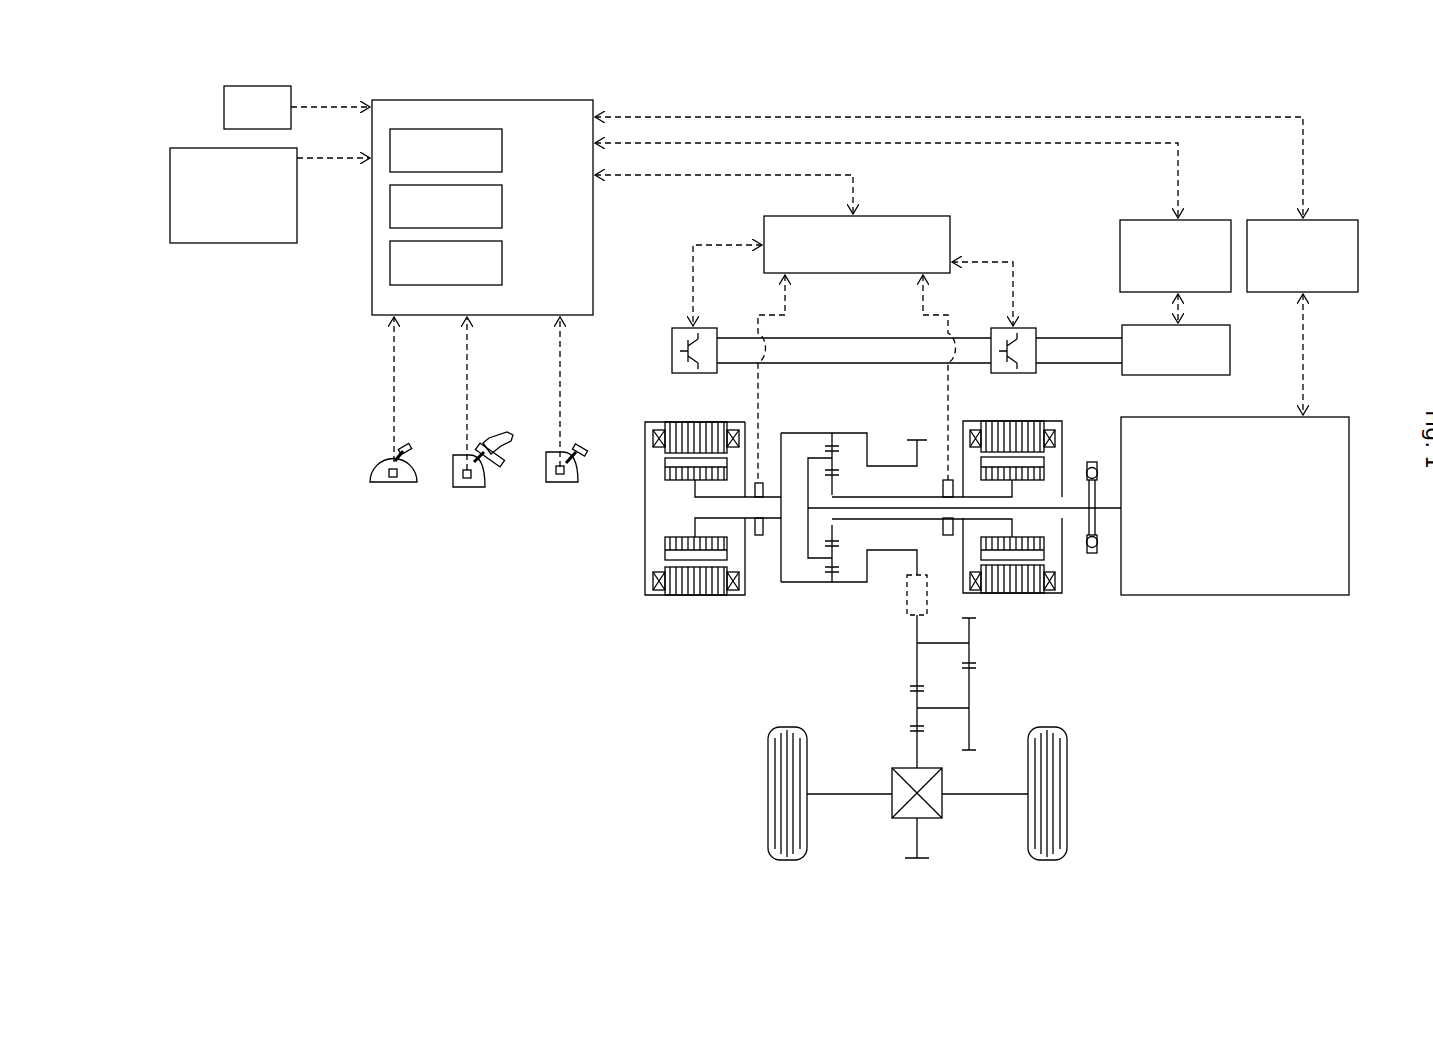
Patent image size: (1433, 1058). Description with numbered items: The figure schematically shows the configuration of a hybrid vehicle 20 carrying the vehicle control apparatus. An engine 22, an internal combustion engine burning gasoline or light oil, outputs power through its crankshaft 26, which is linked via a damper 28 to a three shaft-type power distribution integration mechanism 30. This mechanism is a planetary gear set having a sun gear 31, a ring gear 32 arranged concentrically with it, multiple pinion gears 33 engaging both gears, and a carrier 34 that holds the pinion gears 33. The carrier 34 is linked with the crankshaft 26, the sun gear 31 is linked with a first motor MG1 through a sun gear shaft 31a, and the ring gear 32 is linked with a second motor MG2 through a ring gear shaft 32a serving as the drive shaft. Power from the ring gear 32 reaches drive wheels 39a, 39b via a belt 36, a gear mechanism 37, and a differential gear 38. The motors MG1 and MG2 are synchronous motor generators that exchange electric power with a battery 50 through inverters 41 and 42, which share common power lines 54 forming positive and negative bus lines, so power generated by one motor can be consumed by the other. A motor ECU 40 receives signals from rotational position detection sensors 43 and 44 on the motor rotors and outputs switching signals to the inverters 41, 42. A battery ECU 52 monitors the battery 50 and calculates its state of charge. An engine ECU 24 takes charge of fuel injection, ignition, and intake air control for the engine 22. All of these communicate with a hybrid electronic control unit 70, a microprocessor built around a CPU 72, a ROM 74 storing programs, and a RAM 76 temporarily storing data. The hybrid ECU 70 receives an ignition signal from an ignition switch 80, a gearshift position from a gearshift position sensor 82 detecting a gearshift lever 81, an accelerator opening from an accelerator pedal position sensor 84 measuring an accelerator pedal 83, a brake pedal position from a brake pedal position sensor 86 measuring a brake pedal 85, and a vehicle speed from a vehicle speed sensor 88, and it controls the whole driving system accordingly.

The hybrid vehicle 20 is at (1327, 107).
The engine 22 is at (1273, 595).
The engine ECU 24 is at (1345, 220).
The crankshaft 26 is at (1110, 507).
The damper 28 is at (1089, 553).
The power distribution integration mechanism 30 is at (760, 670).
The sun gear 31 is at (835, 532).
The sun gear shaft 31a is at (917, 519).
The ring gear 32 is at (832, 440).
The ring gear shaft 32a is at (747, 518).
The pinion gears 33 is at (835, 462).
The carrier 34 is at (807, 467).
The belt 36 is at (928, 600).
The gear mechanism 37 is at (1085, 713).
The differential gear 38 is at (942, 807).
The drive wheel 39a is at (768, 832).
The drive wheel 39b is at (1067, 832).
The motor ECU 40 is at (910, 216).
The inverter 41 is at (683, 328).
The inverter 42 is at (1023, 327).
The rotational position detection sensor 43 is at (946, 480).
The rotational position detection sensor 44 is at (756, 483).
The battery 50 is at (1230, 352).
The battery ECU 52 is at (1205, 220).
The power lines 54 is at (832, 363).
The hybrid electronic control unit 70 is at (372, 260).
The CPU 72 is at (503, 153).
The ROM 74 is at (503, 208).
The RAM 76 is at (503, 265).
The ignition switch 80 is at (224, 103).
The gearshift lever 81 is at (410, 457).
The gearshift position sensor 82 is at (392, 477).
The accelerator pedal 83 is at (487, 467).
The accelerator pedal position sensor 84 is at (467, 480).
The brake pedal 85 is at (583, 457).
The brake pedal position sensor 86 is at (563, 477).
The vehicle speed sensor 88 is at (170, 177).
The first motor MG1 is at (1027, 593).
The second motor MG2 is at (692, 597).